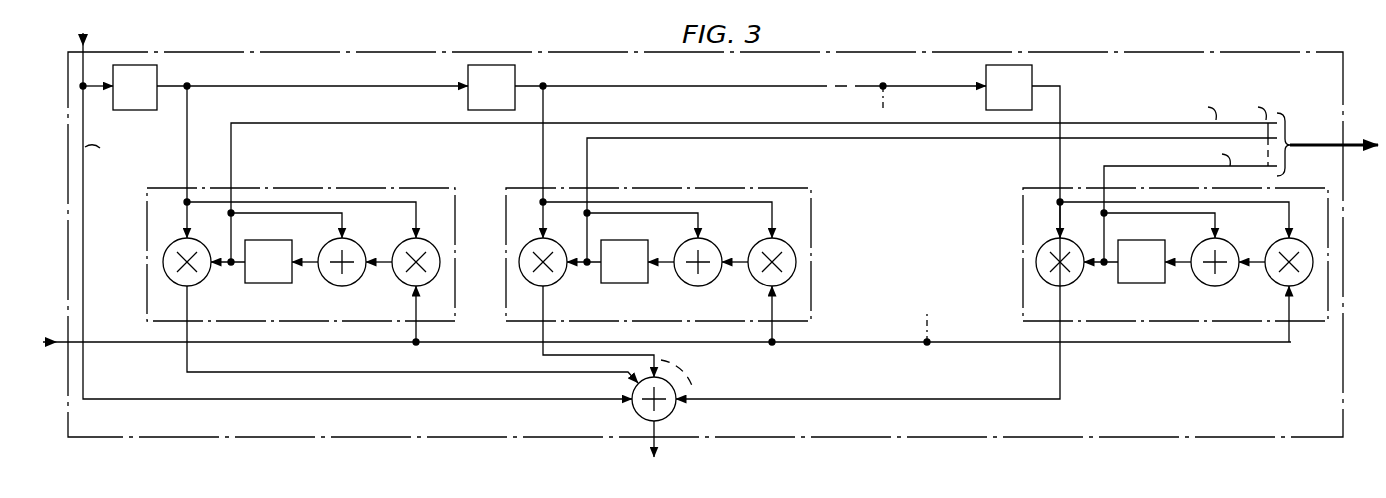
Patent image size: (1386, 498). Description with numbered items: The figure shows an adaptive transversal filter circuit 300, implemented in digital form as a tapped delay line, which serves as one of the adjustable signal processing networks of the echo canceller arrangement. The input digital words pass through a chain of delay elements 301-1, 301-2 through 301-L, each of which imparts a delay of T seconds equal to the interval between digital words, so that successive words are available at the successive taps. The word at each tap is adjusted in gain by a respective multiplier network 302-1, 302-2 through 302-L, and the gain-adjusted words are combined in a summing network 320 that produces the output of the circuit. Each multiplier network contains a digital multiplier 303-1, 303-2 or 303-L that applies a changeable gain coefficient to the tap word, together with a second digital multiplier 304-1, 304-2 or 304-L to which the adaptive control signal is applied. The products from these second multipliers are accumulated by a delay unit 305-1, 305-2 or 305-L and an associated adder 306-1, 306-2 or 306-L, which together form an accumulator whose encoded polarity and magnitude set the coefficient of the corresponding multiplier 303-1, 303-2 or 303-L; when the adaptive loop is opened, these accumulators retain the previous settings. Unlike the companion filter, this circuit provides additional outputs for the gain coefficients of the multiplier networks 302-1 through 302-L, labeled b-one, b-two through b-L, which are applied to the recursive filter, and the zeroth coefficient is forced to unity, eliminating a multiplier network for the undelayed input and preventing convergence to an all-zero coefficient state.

The adaptive transversal filter circuit 300 is at (352, 39).
The delay element 301-1 is at (157, 73).
The delay element 301-2 is at (515, 73).
The delay element 301-L is at (1032, 73).
The multiplier network 302-1 is at (385, 190).
The multiplier network 302-2 is at (658, 249).
The multiplier network 302-L is at (1153, 249).
The digital multiplier 303-1 is at (205, 280).
The digital multiplier 303-2 is at (566, 277).
The digital multiplier 303-L is at (1084, 277).
The digital multiplier 304-1 is at (402, 242).
The digital multiplier 304-2 is at (750, 246).
The digital multiplier 304-L is at (1268, 246).
The delay unit 305-1 is at (258, 240).
The delay unit 305-2 is at (638, 251).
The delay unit 305-L is at (1154, 251).
The adder 306-1 is at (357, 280).
The adder 306-2 is at (713, 277).
The adder 306-L is at (1229, 277).
The summing network 320 is at (669, 413).